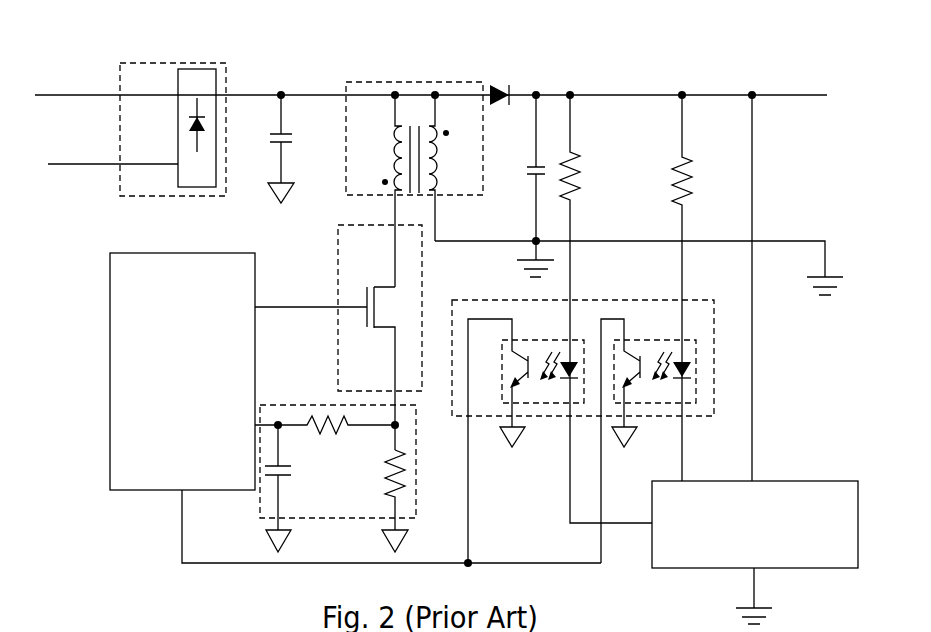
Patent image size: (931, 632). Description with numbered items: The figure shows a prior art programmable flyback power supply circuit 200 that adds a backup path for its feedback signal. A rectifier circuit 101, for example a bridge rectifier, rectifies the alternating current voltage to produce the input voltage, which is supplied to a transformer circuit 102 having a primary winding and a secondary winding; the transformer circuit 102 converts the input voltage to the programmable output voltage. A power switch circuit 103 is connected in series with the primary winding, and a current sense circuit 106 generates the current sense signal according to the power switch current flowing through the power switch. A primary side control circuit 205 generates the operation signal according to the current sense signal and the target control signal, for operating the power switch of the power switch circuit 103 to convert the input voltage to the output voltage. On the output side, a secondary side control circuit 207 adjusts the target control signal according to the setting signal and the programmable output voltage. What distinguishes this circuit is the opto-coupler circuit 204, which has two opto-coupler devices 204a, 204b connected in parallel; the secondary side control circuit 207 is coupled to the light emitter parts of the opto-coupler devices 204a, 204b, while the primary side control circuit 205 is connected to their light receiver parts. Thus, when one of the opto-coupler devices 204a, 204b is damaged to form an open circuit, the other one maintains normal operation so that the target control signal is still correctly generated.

The programmable flyback power supply circuit 200 is at (804, 65).
The rectifier circuit 101 is at (157, 189).
The transformer circuit 102 is at (428, 82).
The power switch circuit 103 is at (381, 257).
The current sense circuit 106 is at (262, 505).
The primary side control circuit 205 is at (155, 288).
The opto-coupler circuit 204 is at (636, 431).
The opto-coupler device 204a is at (560, 404).
The opto-coupler device 204b is at (673, 404).
The secondary side control circuit 207 is at (848, 564).